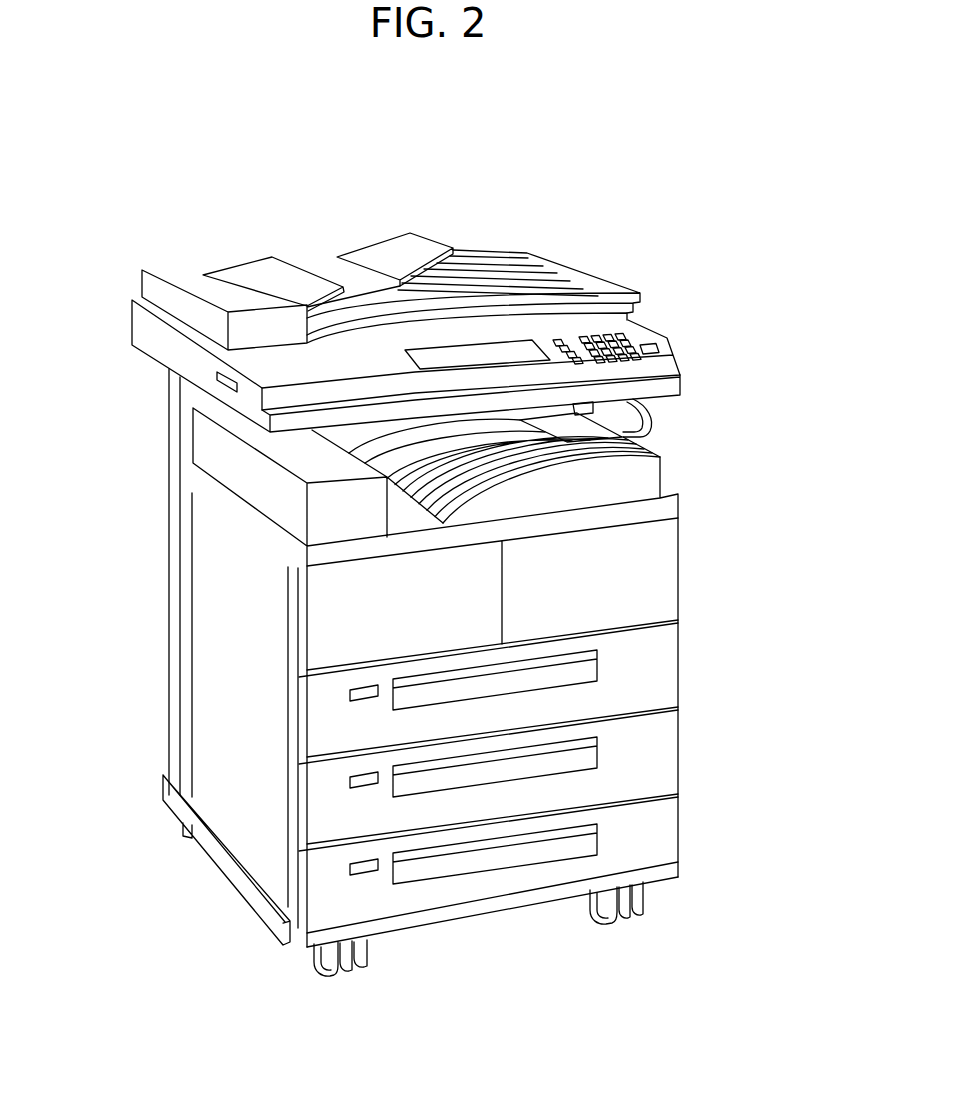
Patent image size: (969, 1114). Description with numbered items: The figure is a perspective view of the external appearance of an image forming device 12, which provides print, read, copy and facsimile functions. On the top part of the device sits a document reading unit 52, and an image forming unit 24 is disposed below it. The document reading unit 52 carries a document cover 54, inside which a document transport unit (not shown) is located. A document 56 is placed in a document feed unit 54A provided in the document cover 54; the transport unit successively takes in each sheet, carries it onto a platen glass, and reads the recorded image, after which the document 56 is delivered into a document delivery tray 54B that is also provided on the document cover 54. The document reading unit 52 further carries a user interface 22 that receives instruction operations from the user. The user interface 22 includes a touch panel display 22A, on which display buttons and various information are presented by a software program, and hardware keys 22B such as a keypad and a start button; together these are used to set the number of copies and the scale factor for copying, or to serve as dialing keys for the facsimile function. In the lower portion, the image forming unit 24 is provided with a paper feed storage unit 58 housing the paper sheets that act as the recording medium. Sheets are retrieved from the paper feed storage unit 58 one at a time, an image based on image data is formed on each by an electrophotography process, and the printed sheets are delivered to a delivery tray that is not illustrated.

The image forming device 12 is at (530, 147).
The user interface 22 is at (429, 341).
The touch panel display 22A is at (420, 360).
The hardware keys 22B is at (647, 343).
The image forming unit 24 is at (226, 800).
The document reading unit 52 is at (150, 321).
The document cover 54 is at (159, 291).
The document feed unit 54A is at (394, 245).
The document delivery tray 54B is at (473, 285).
The document 56 is at (243, 278).
The paper feed storage unit 58 is at (709, 826).